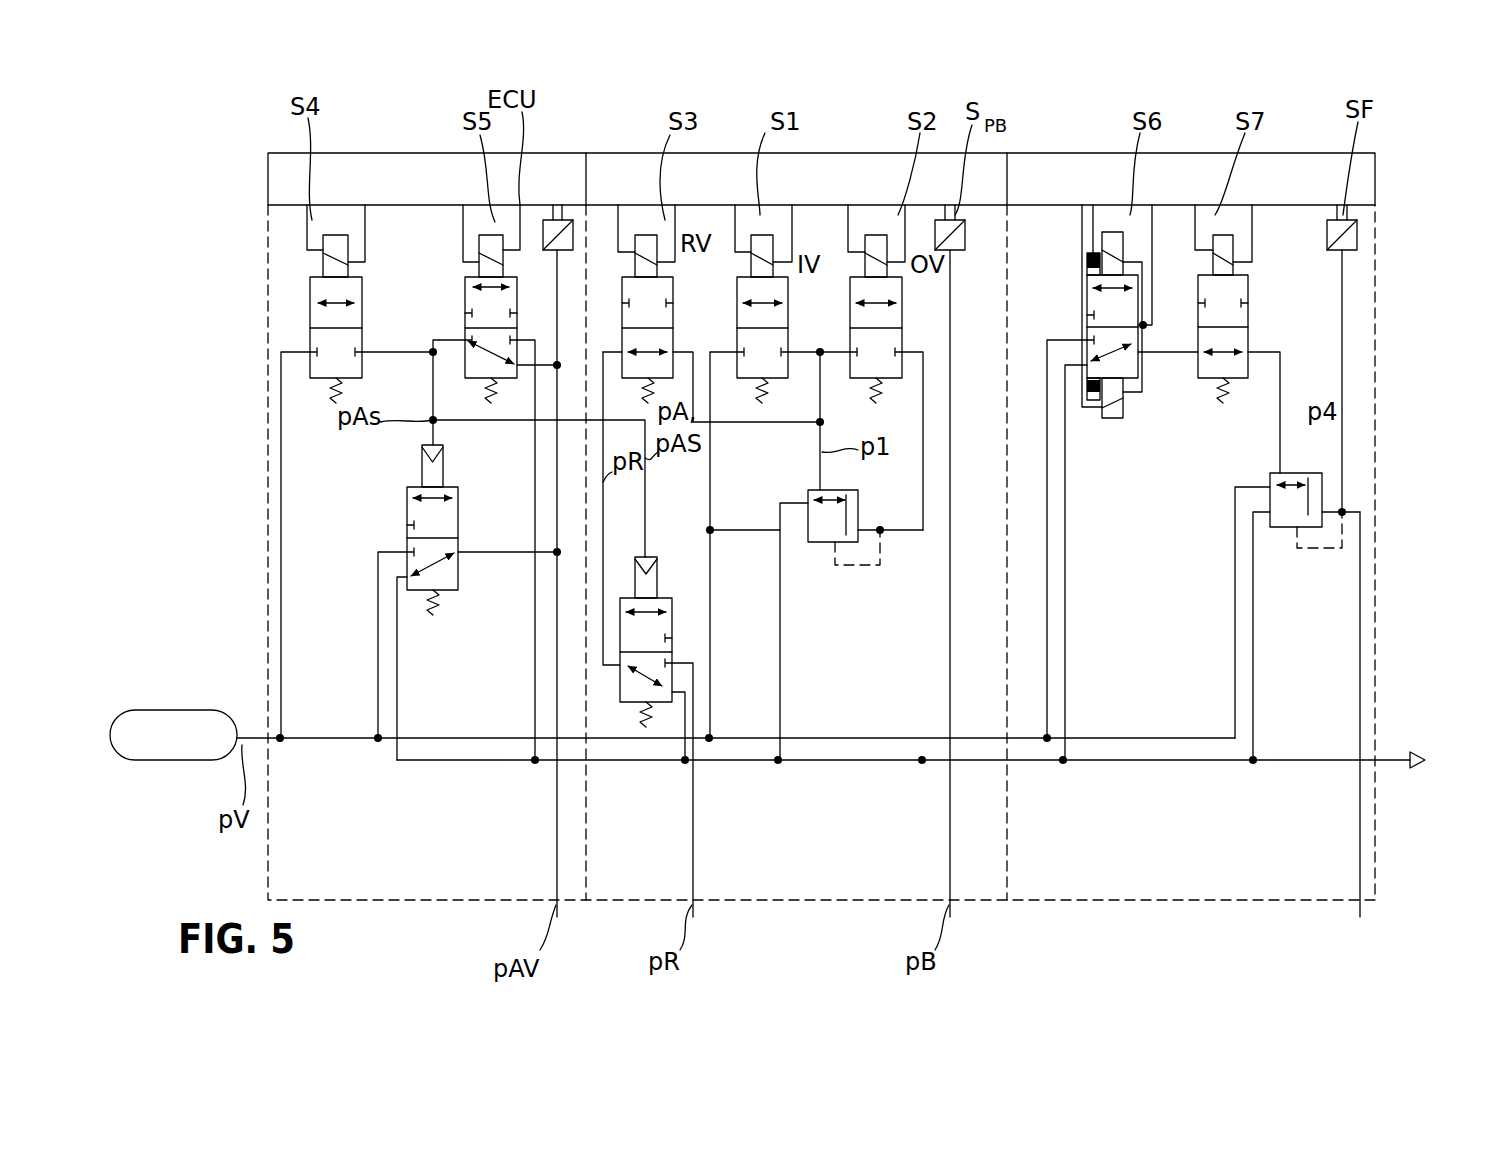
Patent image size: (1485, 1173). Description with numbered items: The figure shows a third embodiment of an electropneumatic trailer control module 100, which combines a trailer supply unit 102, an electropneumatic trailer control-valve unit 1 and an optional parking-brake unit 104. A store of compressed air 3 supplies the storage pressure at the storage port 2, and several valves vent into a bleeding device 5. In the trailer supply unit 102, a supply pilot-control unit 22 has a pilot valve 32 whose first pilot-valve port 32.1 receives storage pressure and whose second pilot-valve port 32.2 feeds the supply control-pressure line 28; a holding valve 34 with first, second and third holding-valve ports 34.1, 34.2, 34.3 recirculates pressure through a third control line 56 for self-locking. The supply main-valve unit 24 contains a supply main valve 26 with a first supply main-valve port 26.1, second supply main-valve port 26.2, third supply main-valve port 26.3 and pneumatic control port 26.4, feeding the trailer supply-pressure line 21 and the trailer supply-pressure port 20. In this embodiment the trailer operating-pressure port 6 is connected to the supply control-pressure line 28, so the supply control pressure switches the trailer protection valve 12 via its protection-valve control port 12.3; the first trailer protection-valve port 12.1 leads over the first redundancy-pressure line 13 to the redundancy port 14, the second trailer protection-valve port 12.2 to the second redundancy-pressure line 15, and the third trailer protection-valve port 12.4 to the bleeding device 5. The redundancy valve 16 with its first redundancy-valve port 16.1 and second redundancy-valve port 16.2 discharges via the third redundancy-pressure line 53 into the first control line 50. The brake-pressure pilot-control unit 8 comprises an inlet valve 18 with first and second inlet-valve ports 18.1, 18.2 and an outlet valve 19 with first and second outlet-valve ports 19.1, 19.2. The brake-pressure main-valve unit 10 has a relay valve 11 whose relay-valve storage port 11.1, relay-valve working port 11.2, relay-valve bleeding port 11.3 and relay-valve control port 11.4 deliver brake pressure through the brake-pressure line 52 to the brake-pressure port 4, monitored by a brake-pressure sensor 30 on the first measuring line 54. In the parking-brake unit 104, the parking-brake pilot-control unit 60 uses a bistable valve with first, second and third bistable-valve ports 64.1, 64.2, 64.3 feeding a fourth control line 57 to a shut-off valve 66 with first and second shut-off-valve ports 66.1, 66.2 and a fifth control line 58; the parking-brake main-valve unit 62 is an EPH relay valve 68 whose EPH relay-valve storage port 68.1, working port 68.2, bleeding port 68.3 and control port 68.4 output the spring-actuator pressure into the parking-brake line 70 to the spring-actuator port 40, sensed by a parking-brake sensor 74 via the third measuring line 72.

The electropneumatic trailer control module 100 is at (280, 148).
The trailer supply unit 102 is at (408, 148).
The electropneumatic trailer control-valve unit 1 is at (638, 148).
The parking-brake unit 104 is at (1080, 148).
The brake-pressure pilot-control unit 8 is at (613, 225).
The store of compressed air 3 is at (160, 710).
The storage port 2 is at (268, 735).
The bleeding device 5 is at (1425, 768).
The supply pilot-control unit 22 is at (288, 292).
The pilot valve 32 is at (362, 303).
The first pilot-valve port 32.1 is at (310, 350).
The second pilot-valve port 32.2 is at (362, 352).
The supply control-pressure line 28 is at (432, 403).
The holding valve 34 is at (465, 285).
The first holding-valve port 34.1 is at (517, 340).
The second holding-valve port 34.2 is at (466, 342).
The third holding-valve port 34.3 is at (435, 432).
The supply main-valve unit 24 is at (343, 497).
The supply main valve 26 is at (407, 487).
The first supply main-valve port 26.1 is at (407, 552).
The second supply main-valve port 26.2 is at (458, 552).
The third supply main-valve port 26.3 is at (407, 582).
The pneumatic control port 26.4 is at (443, 460).
The third control line 56 is at (557, 485).
The trailer supply-pressure line 21 is at (557, 843).
The trailer supply-pressure port 20 is at (558, 905).
The redundancy valve 16 is at (622, 305).
The first redundancy-valve port 16.1 is at (620, 352).
The second redundancy-valve port 16.2 is at (673, 352).
The second redundancy-pressure line 15 is at (603, 515).
The trailer operating-pressure port 6 is at (604, 418).
The trailer protection valve 12 is at (672, 598).
The first trailer protection-valve port 12.1 is at (673, 663).
The second trailer protection-valve port 12.2 is at (622, 673).
The protection-valve control port 12.3 is at (648, 555).
The third trailer protection-valve port 12.4 is at (673, 688).
The first redundancy-pressure line 13 is at (693, 825).
The redundancy port 14 is at (693, 905).
The inlet valve 18 is at (737, 285).
The first inlet-valve port 18.1 is at (737, 350).
The second inlet-valve port 18.2 is at (813, 338).
The outlet valve 19 is at (902, 315).
The first outlet-valve port 19.1 is at (850, 348).
The second outlet-valve port 19.2 is at (905, 353).
The brake-pressure sensor 30 is at (965, 245).
The first control line 50 is at (822, 388).
The brake-pressure main-valve unit 10 is at (910, 448).
The relay valve 11 is at (858, 490).
The relay-valve storage port 11.1 is at (797, 540).
The relay-valve working port 11.2 is at (858, 527).
The relay-valve bleeding port 11.3 is at (800, 515).
The relay-valve control port 11.4 is at (810, 488).
The third redundancy-pressure line 53 is at (722, 424).
The first measuring line 54 is at (925, 512).
The brake-pressure line 52 is at (950, 680).
The brake-pressure port 4 is at (951, 905).
The first bistable-valve port 64.1 is at (1087, 340).
The second bistable-valve port 64.2 is at (1145, 323).
The third bistable-valve port 64.3 is at (1085, 370).
The fourth control line 57 is at (1182, 355).
The shut-off valve 66 is at (1248, 277).
The first shut-off-valve port 66.1 is at (1203, 378).
The second shut-off-valve port 66.2 is at (1248, 350).
The fifth control line 58 is at (1282, 380).
The parking-brake pilot-control unit 60 is at (1300, 278).
The parking-brake sensor 74 is at (1357, 237).
The third measuring line 72 is at (1343, 347).
The parking-brake main-valve unit 62 is at (1325, 390).
The EPH relay valve 68 is at (1275, 473).
The EPH relay-valve storage port 68.1 is at (1235, 490).
The EPH relay-valve working port 68.2 is at (1330, 508).
The EPH relay-valve bleeding port 68.3 is at (1263, 517).
The EPH relay-valve control port 68.4 is at (1320, 455).
The parking-brake line 70 is at (1362, 660).
The spring-actuator port 40 is at (1362, 917).